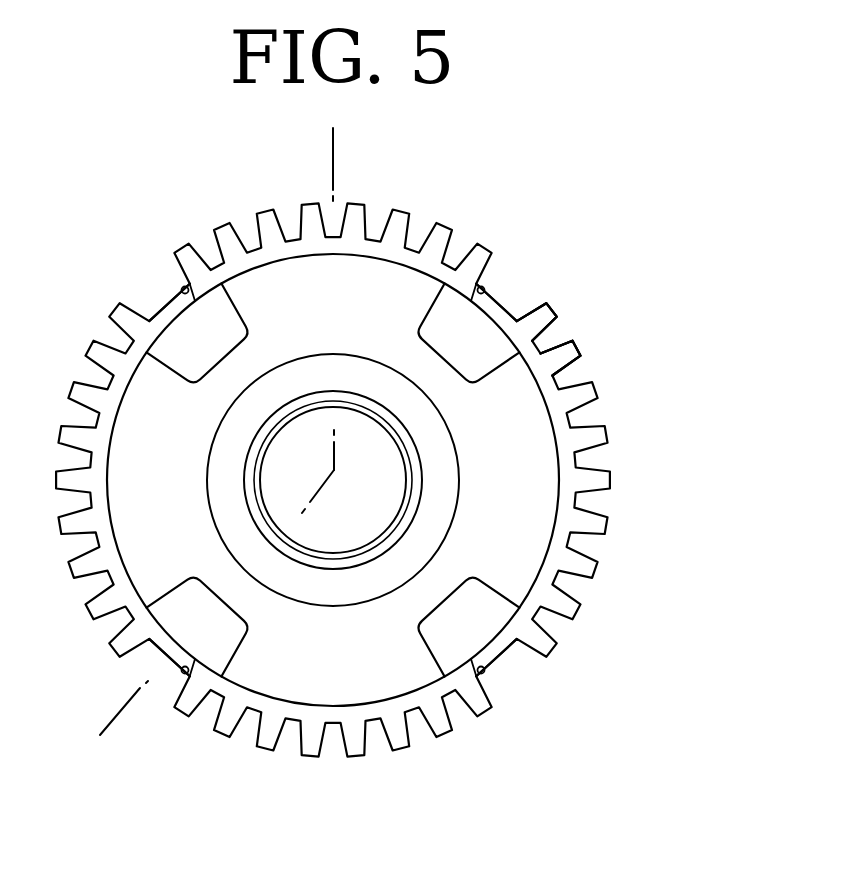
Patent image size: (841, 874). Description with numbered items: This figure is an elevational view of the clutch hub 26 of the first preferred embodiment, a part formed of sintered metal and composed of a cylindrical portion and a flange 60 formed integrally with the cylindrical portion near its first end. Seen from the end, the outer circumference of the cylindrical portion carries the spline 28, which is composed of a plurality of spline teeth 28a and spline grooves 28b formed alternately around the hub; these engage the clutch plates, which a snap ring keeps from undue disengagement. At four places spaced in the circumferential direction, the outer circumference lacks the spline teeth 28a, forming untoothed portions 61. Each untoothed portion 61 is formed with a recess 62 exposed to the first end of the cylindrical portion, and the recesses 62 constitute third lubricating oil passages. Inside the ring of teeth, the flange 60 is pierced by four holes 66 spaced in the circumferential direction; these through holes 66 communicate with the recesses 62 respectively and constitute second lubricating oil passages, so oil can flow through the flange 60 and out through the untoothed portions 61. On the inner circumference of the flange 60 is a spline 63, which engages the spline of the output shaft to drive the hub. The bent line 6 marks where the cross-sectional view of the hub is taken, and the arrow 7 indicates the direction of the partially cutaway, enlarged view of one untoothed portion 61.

The clutch hub 26 is at (242, 204).
The spline 28 is at (650, 283).
The spline teeth 28a is at (553, 303).
The spline grooves 28b is at (548, 332).
The flange 60 is at (540, 461).
The untoothed portions 61 is at (160, 305).
The recess 62 is at (182, 288).
The spline 63 is at (378, 418).
The holes 66 is at (187, 373).
The line 6— 6 is at (336, 148).
The arrow 7 is at (519, 684).